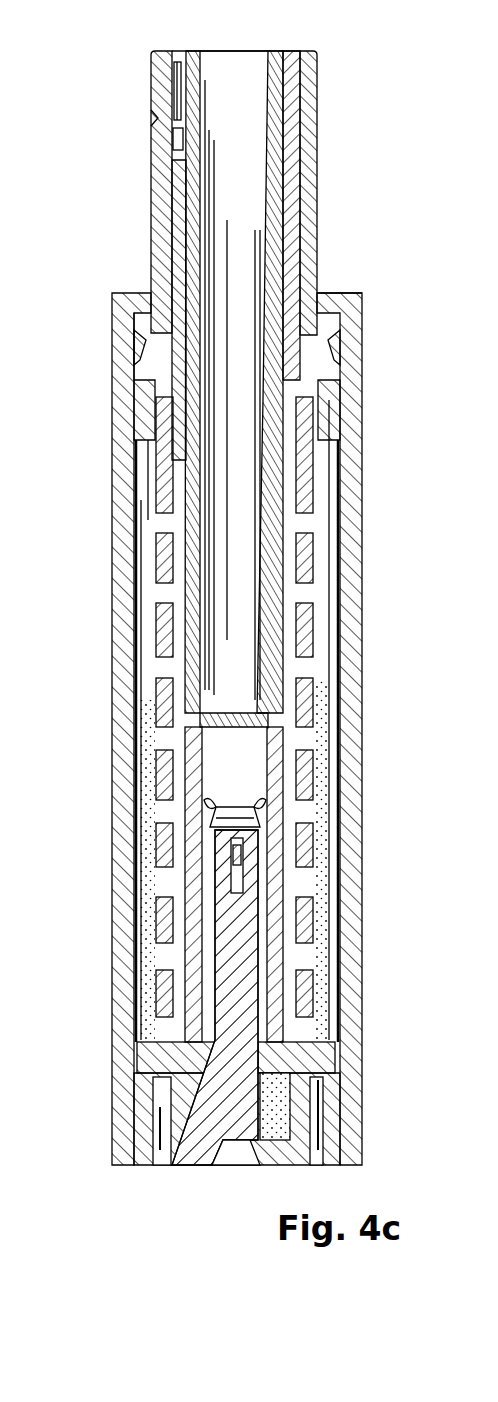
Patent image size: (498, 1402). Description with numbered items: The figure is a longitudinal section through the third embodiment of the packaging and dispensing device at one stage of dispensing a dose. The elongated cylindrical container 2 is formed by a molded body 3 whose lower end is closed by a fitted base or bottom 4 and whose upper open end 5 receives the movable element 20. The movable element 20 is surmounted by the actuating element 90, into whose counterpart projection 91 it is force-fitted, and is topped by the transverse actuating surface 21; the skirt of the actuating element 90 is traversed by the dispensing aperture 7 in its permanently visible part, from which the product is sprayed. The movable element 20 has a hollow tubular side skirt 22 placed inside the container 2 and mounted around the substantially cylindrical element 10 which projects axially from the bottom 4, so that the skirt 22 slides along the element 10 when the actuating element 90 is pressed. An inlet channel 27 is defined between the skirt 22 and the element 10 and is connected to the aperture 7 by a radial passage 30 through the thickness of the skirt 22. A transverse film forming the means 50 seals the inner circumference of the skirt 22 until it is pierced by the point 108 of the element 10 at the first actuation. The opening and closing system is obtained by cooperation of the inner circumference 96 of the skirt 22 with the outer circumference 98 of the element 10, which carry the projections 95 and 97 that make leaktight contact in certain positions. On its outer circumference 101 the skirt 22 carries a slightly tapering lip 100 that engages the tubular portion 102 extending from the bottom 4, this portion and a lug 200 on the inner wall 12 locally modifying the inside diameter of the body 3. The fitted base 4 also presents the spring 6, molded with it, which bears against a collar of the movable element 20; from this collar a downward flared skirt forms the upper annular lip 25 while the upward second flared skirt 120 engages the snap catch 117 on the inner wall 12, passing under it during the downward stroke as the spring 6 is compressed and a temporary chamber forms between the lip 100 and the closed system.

The container 2 is at (165, 670).
The body 3 is at (343, 333).
The bottom 4 is at (200, 1160).
The open end 5 is at (322, 290).
The spring 6 is at (318, 553).
The dispensing aperture 7 is at (152, 116).
The element 10 is at (243, 957).
The inner wall 12 is at (155, 1088).
The movable element 20 is at (308, 208).
The transverse actuating surface 21 is at (295, 52).
The hollow tubular side skirt 22 is at (305, 752).
The upper annular lip 25 is at (134, 425).
The inlet channel 27 is at (195, 522).
The radial passage 30 is at (188, 65).
The means 50 is at (210, 808).
The actuating element 90 is at (318, 170).
The counterpart projection 91 is at (292, 115).
The first means 95 is at (152, 1006).
The inner circumference 96 is at (190, 760).
The second means 97 is at (330, 1090).
The outer circumference 98 is at (290, 1000).
The lip 100 is at (140, 1042).
The outer circumference 101 is at (150, 890).
The tubular portion 102 is at (160, 1122).
The point 108 is at (245, 870).
The snap catch 117 is at (133, 348).
The second flared skirt 120 is at (144, 372).
The lug 200 is at (125, 460).